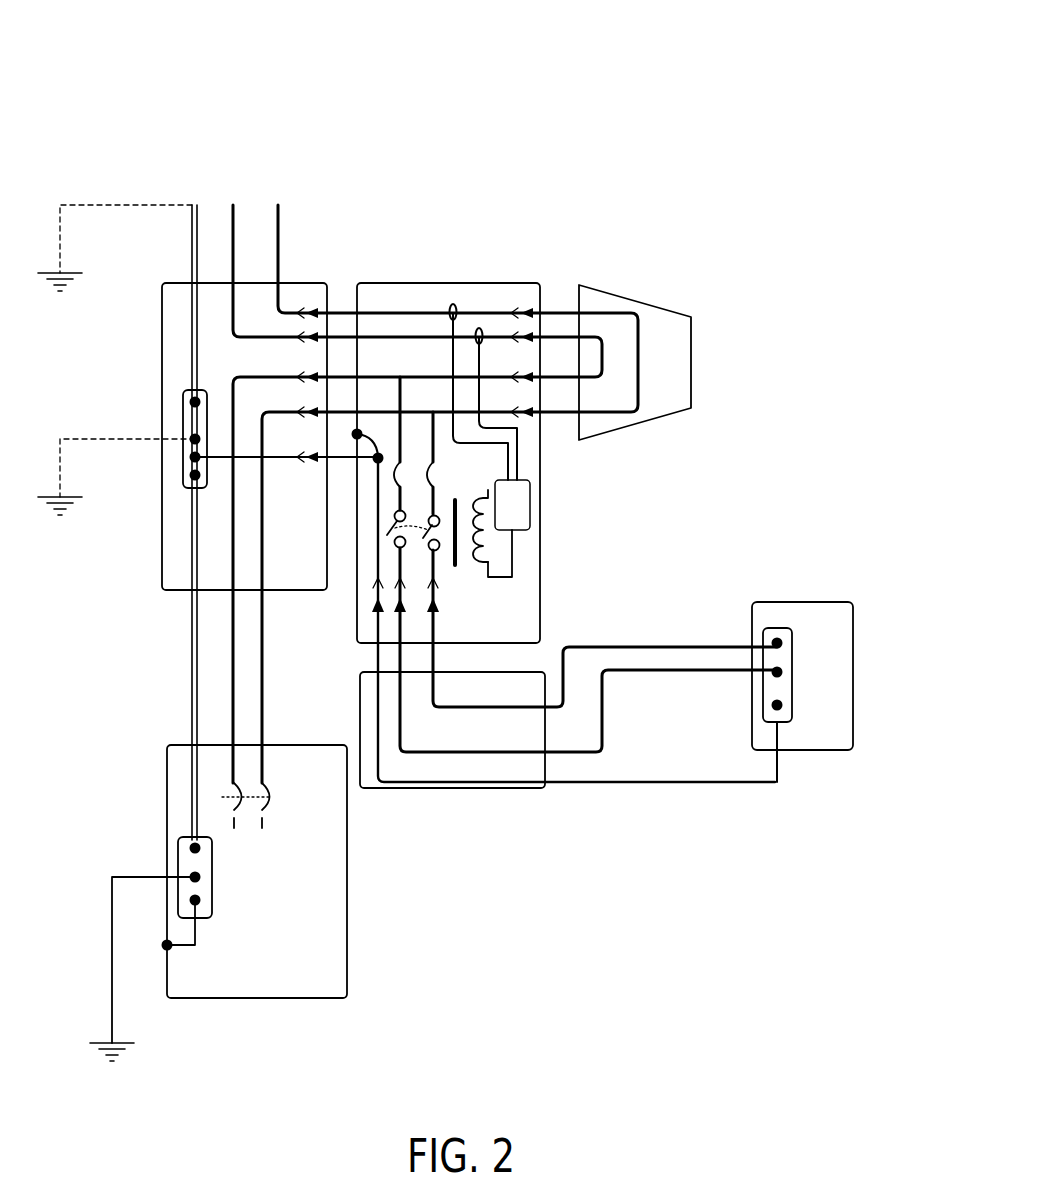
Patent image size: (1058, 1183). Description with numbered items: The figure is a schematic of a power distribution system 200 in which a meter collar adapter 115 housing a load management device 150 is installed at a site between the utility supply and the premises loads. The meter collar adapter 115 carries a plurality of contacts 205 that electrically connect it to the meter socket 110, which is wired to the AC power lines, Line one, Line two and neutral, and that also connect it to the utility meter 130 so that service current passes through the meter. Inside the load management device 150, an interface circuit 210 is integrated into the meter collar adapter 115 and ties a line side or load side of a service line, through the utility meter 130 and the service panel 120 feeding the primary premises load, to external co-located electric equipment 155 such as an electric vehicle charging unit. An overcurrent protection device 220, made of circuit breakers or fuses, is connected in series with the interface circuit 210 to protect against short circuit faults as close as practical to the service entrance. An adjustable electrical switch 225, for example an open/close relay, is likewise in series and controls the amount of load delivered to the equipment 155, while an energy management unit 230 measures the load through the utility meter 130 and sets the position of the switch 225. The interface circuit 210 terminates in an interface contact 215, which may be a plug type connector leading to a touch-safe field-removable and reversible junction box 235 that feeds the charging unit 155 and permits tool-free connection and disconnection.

The power distribution system 200 is at (540, 139).
The meter socket 110 is at (296, 285).
The contacts 205 is at (314, 306).
The interface circuit 210 is at (406, 366).
The meter collar adapter 115 is at (540, 283).
The utility meter 130 is at (694, 326).
The load management device 150 is at (637, 485).
The overcurrent protection device 220 is at (449, 475).
The energy management unit 230 is at (534, 508).
The interface contact 215 is at (457, 589).
The co-located electric equipment 155 is at (799, 599).
The adjustable electrical switch 225 is at (376, 550).
The touch-safe field-removable and reversible junction box 235 is at (430, 789).
The service panel 120 is at (274, 823).